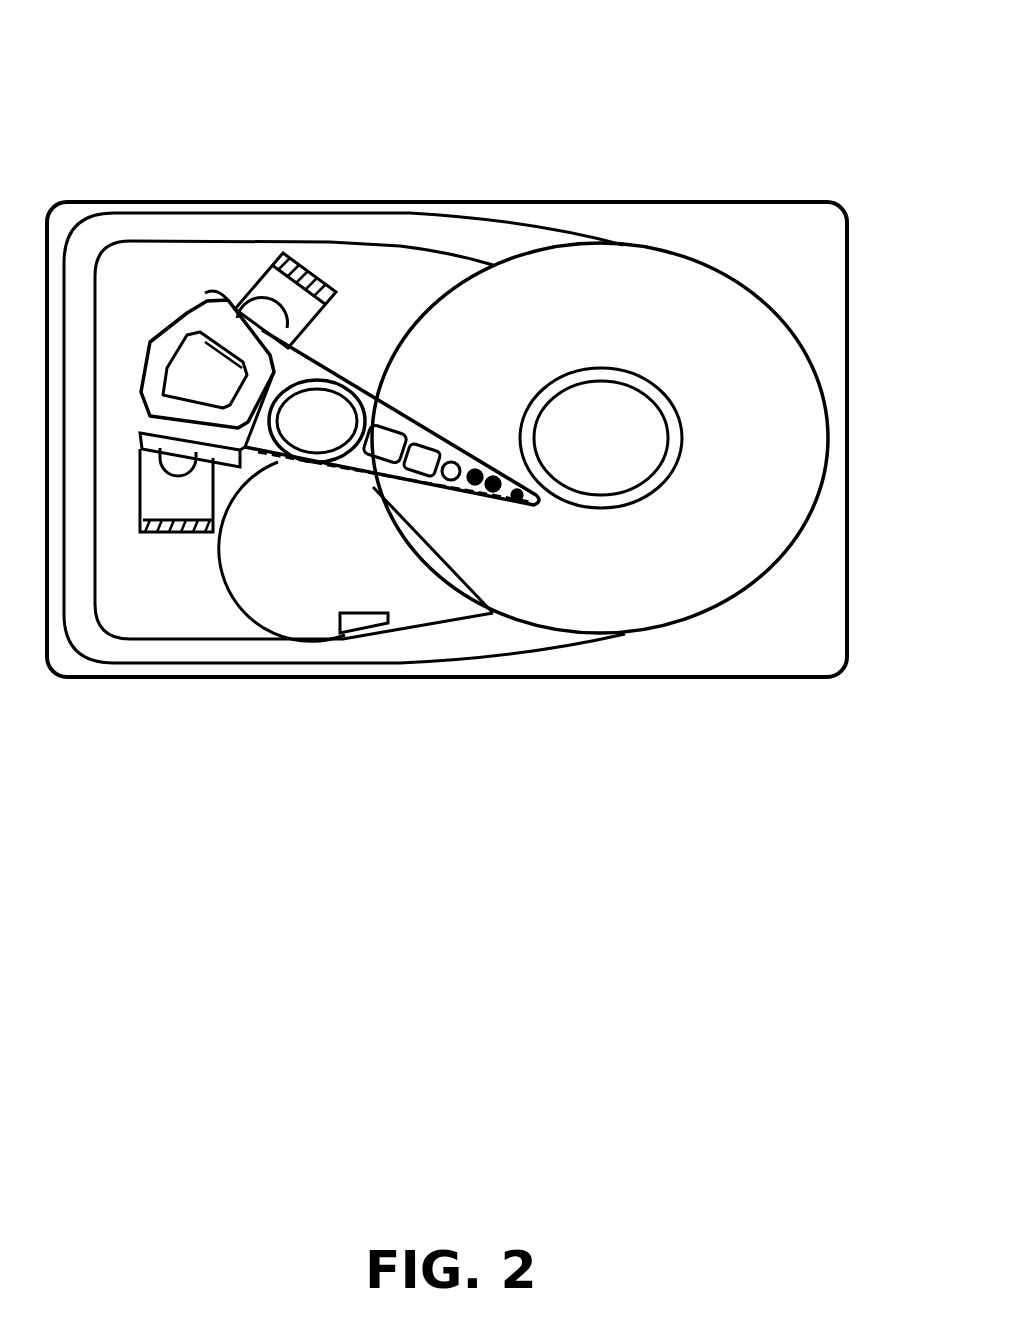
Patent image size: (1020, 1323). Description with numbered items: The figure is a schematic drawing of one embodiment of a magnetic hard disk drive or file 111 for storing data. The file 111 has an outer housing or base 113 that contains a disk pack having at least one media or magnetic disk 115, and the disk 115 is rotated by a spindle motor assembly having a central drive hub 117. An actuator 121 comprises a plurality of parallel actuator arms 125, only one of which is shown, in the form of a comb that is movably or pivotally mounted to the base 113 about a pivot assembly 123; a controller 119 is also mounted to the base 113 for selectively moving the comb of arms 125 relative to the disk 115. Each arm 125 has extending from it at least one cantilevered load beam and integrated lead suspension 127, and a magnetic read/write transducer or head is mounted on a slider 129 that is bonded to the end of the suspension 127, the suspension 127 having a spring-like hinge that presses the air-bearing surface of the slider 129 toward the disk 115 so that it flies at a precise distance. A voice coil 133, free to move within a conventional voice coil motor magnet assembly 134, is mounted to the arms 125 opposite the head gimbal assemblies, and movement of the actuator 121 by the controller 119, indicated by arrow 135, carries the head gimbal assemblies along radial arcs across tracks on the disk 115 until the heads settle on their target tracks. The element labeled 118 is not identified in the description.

The magnetic hard disk drive or file 111 is at (790, 108).
The outer housing or base 113 is at (660, 203).
The magnetic disk 115 is at (692, 278).
The central drive hub 117 is at (633, 372).
The actuator stop arc 118 is at (279, 623).
The controller 119 is at (371, 613).
The actuator 121 is at (252, 530).
The pivot assembly 123 is at (286, 463).
The actuator arm 125 is at (380, 398).
The integrated lead suspension 127 is at (482, 466).
The slider 129 is at (517, 500).
The voice coil 133 is at (178, 325).
The voice coil motor magnet assembly 134 is at (270, 288).
The arrow 135 is at (470, 498).